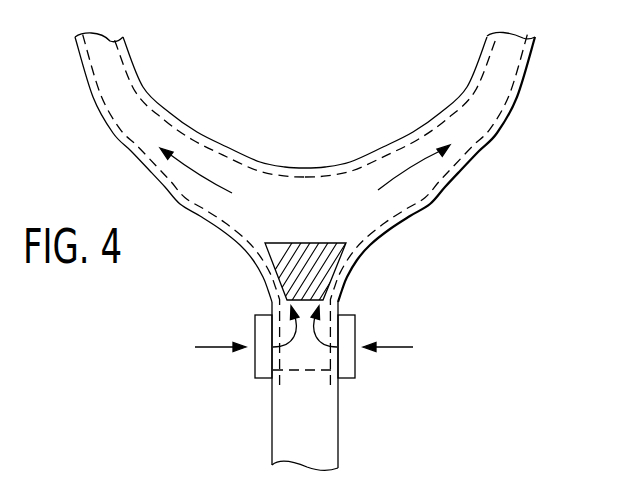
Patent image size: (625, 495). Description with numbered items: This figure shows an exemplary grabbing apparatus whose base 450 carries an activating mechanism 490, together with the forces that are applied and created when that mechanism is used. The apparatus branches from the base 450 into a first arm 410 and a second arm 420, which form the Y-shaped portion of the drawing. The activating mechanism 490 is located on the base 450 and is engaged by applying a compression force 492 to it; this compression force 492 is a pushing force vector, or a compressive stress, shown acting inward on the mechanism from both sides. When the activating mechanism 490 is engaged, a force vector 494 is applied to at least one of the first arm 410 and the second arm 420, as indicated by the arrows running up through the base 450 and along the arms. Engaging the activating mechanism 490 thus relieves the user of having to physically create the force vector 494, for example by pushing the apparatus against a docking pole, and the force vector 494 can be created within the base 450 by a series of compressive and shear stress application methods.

The first arm 410 is at (92, 95).
The second arm 420 is at (522, 87).
The base 450 is at (325, 386).
The activating mechanism 490 is at (263, 323).
The compression force 492 is at (390, 348).
The force vector 494 is at (392, 181).